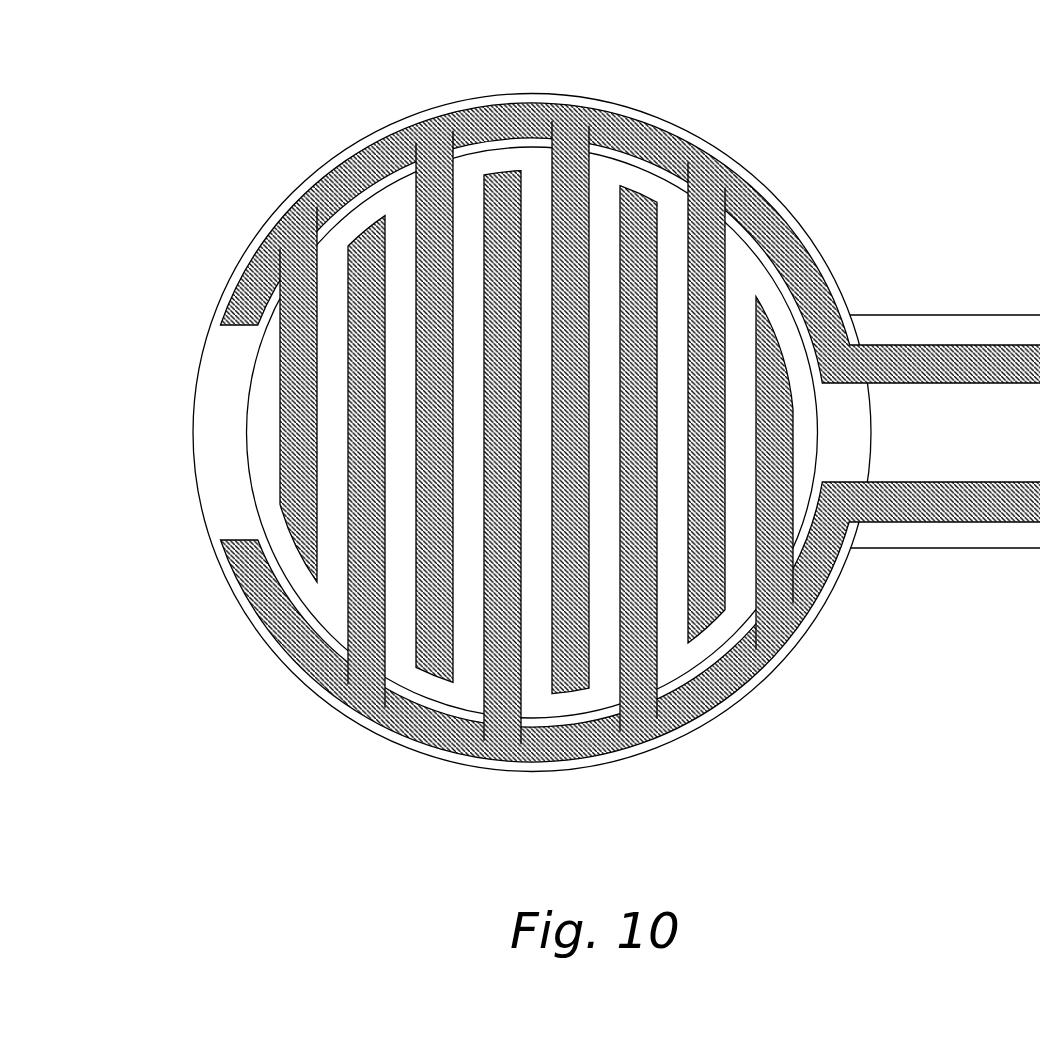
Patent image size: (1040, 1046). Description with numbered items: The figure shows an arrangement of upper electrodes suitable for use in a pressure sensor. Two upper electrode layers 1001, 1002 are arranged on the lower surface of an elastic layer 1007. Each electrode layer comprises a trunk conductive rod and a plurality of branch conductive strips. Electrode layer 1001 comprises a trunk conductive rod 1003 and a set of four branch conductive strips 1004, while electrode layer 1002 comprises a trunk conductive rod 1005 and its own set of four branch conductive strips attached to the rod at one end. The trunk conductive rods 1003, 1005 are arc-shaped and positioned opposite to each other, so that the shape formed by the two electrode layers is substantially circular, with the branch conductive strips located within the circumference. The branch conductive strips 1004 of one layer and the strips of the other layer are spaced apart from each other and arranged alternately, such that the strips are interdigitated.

The upper electrode layer 1001 is at (778, 205).
The upper electrode layer 1002 is at (765, 675).
The trunk conductive rod 1003 is at (660, 150).
The branch conductive strips 1004 is at (567, 172).
The trunk conductive rod 1005 is at (492, 688).
The elastic layer 1007 is at (215, 444).